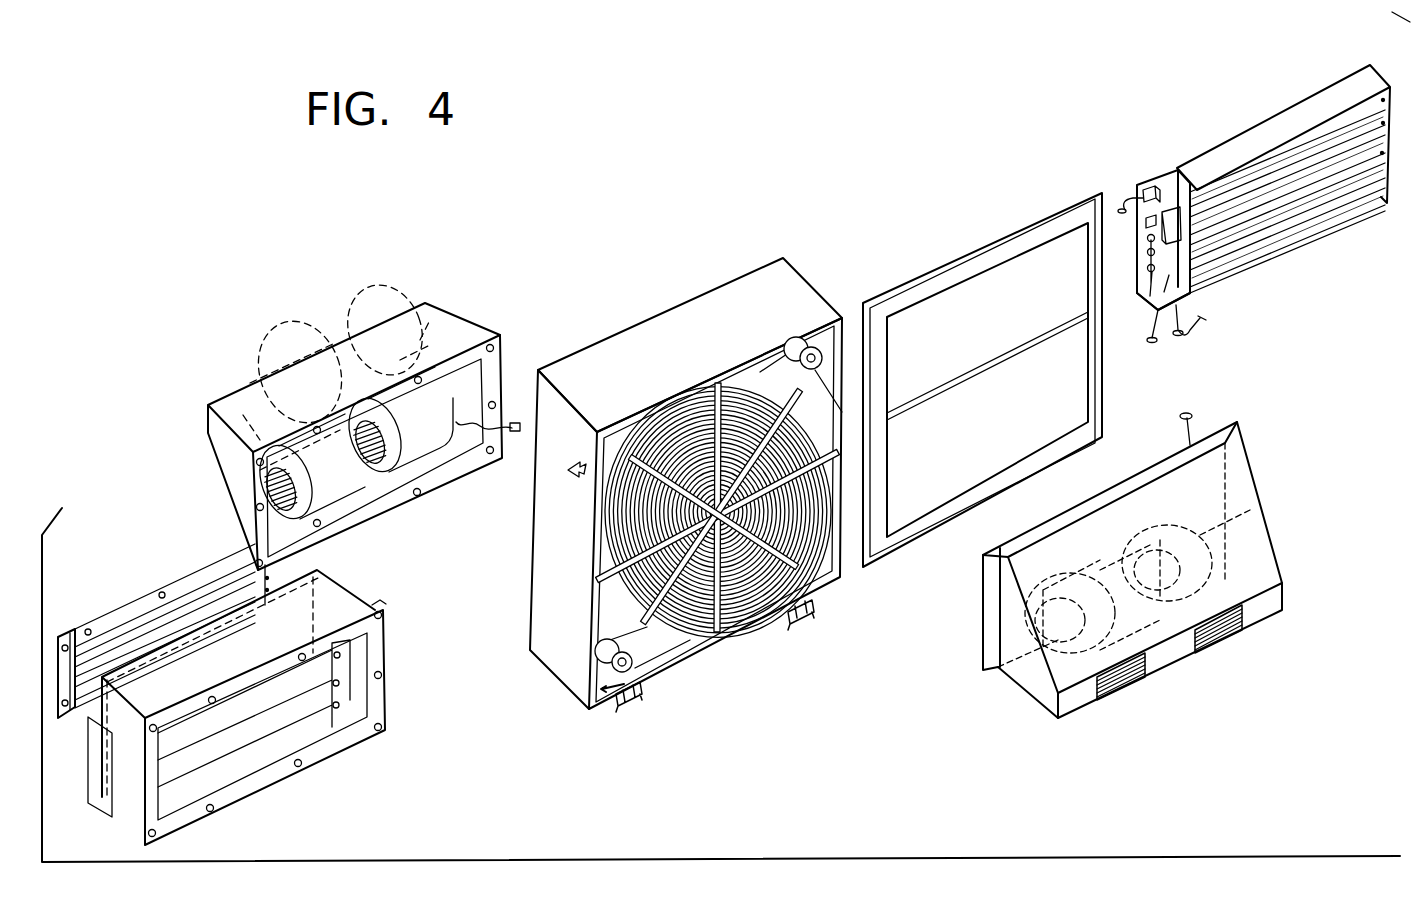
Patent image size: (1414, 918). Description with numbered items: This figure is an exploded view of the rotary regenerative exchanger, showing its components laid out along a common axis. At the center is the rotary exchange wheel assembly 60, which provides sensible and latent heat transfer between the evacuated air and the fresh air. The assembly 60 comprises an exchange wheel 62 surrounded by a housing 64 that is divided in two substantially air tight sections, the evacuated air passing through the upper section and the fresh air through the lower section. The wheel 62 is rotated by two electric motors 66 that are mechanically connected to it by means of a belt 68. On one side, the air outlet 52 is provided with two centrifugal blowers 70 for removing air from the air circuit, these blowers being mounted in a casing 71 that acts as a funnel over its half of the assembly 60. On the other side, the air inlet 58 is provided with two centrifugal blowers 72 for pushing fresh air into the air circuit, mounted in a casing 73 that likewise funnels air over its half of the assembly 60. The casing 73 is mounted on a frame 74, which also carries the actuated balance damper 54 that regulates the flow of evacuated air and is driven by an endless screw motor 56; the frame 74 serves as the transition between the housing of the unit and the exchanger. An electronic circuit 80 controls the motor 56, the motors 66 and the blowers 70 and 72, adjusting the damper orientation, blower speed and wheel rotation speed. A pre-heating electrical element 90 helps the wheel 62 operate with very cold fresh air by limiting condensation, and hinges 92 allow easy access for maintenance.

The air outlet 52 is at (238, 380).
The balance damper 54 is at (1252, 143).
The endless screw motor 56 is at (1172, 207).
The air inlet 58 is at (154, 582).
The rotary exchange wheel assembly 60 is at (806, 250).
The exchange wheel 62 is at (757, 600).
The housing 64 is at (705, 315).
The electric motors 66 is at (800, 350).
The belt 68 is at (597, 620).
The centrifugal blowers 70 is at (347, 325).
The casing 71 is at (440, 333).
The centrifugal blowers 72 is at (1203, 602).
The casing 73 is at (1267, 562).
The frame 74 is at (1064, 222).
The electronic circuit 80 is at (1142, 233).
The electrical element 90 is at (227, 735).
The hinges 92 is at (797, 612).